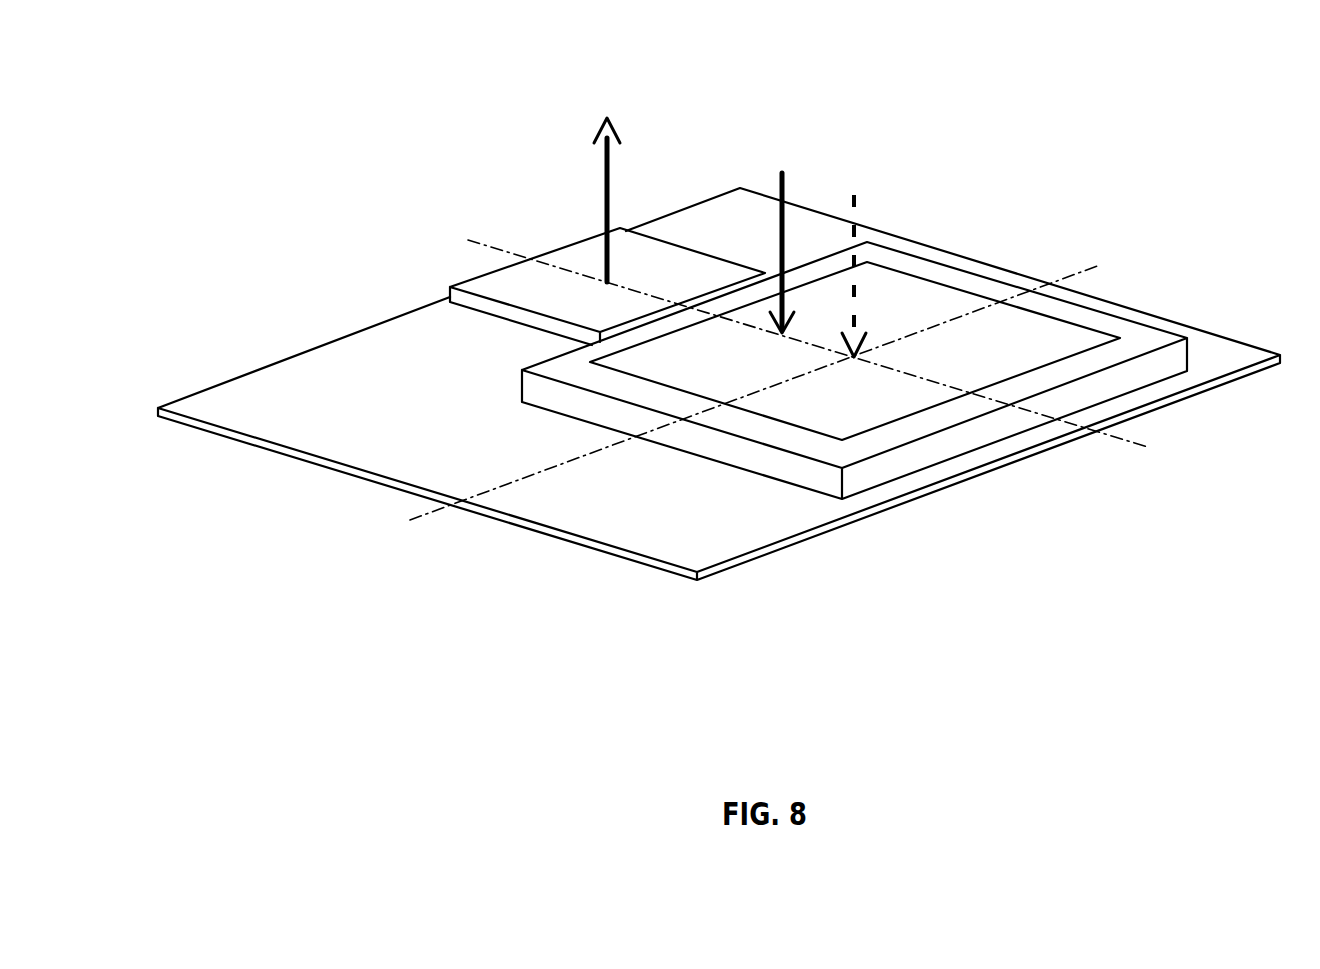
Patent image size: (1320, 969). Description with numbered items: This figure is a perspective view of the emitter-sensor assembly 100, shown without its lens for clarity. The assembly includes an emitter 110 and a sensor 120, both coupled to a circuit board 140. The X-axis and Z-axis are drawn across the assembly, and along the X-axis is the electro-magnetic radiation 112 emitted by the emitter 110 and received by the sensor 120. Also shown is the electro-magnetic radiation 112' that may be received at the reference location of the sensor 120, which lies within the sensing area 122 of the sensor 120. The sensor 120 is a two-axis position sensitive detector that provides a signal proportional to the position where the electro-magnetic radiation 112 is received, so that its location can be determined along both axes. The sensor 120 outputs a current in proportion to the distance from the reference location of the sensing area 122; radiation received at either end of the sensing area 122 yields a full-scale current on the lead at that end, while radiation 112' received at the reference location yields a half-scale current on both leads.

The emitter-sensor assembly 100 is at (1168, 104).
The emitter 110 is at (522, 327).
The electro-magnetic radiation 112 is at (658, 225).
The electro-magnetic radiation 112' is at (890, 248).
The sensor 120 is at (758, 475).
The sensing area 122 is at (923, 275).
The circuit board 140 is at (757, 557).